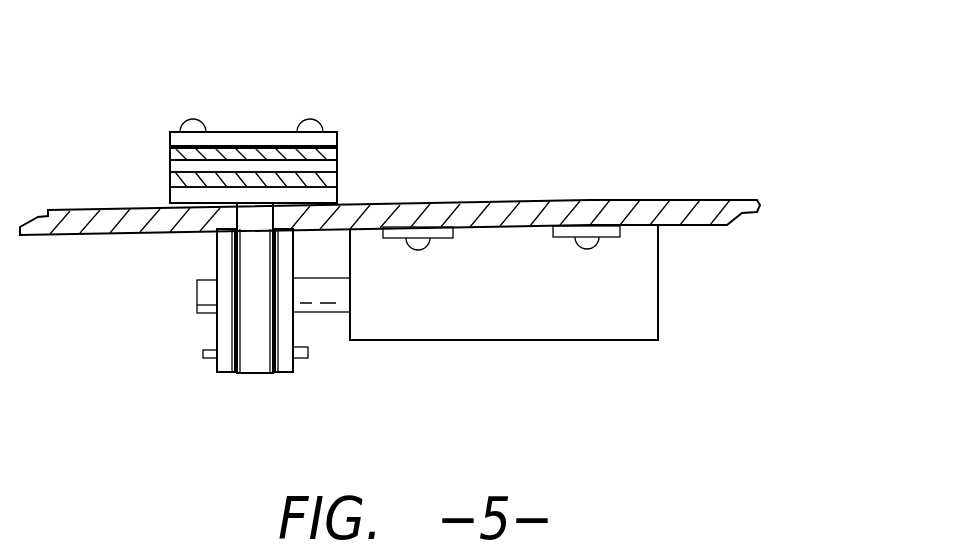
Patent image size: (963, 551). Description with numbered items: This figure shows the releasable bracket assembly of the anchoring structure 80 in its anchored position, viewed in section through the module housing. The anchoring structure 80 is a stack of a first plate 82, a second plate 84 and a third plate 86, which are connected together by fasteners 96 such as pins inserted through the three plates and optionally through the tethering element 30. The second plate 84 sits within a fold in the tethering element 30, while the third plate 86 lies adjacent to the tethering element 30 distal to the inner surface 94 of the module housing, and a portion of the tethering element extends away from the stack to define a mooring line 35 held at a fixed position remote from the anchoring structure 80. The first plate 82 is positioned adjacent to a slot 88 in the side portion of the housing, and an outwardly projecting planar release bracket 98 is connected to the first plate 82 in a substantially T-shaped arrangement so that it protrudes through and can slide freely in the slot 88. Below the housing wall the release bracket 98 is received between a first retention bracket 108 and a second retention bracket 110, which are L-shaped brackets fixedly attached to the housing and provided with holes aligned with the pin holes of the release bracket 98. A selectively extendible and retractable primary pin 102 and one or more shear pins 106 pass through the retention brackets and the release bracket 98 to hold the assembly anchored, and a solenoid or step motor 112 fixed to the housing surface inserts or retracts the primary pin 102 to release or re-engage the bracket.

The anchoring structure 80 is at (294, 92).
The first plate 82 is at (170, 198).
The second plate 84 is at (320, 163).
The third plate 86 is at (337, 132).
The slot 88 is at (278, 200).
The tethering element 30 is at (170, 184).
The mooring line 35 is at (168, 157).
The inner surface of the module housing 94 is at (563, 202).
The fasteners 96 is at (193, 118).
The release bracket 98 is at (252, 373).
The primary pin 102 is at (330, 315).
The shear pins 106 is at (203, 352).
The first retention bracket 108 is at (297, 333).
The second retention bracket 110 is at (200, 320).
The solenoid or step motor 112 is at (658, 303).